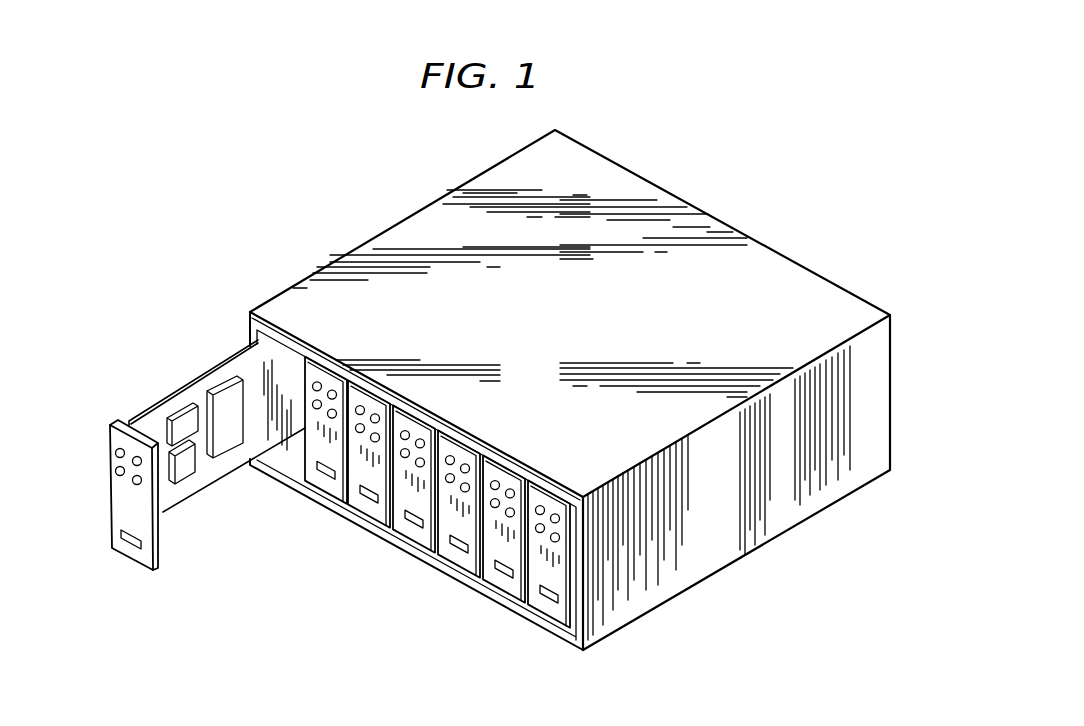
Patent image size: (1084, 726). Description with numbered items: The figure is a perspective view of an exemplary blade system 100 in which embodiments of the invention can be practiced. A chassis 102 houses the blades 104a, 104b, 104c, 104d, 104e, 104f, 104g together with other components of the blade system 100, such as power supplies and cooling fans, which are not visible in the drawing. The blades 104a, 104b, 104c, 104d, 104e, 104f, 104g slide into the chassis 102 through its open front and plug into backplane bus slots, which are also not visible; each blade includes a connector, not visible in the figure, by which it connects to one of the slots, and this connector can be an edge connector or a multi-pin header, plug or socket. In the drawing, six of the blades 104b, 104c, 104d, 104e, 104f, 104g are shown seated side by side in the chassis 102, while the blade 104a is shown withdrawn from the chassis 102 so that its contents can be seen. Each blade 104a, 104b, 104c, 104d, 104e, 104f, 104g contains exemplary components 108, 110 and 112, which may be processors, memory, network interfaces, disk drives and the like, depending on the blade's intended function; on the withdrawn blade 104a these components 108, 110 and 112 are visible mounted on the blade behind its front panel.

The blade system 100 is at (793, 578).
The chassis 102 is at (577, 651).
The blade 104a is at (152, 560).
The blade 104b is at (328, 480).
The blade 104c is at (375, 505).
The blade 104d is at (418, 530).
The blade 104e is at (463, 552).
The blade 104f is at (505, 578).
The blade 104g is at (545, 603).
The component 108 is at (187, 470).
The component 110 is at (190, 408).
The component 112 is at (230, 400).